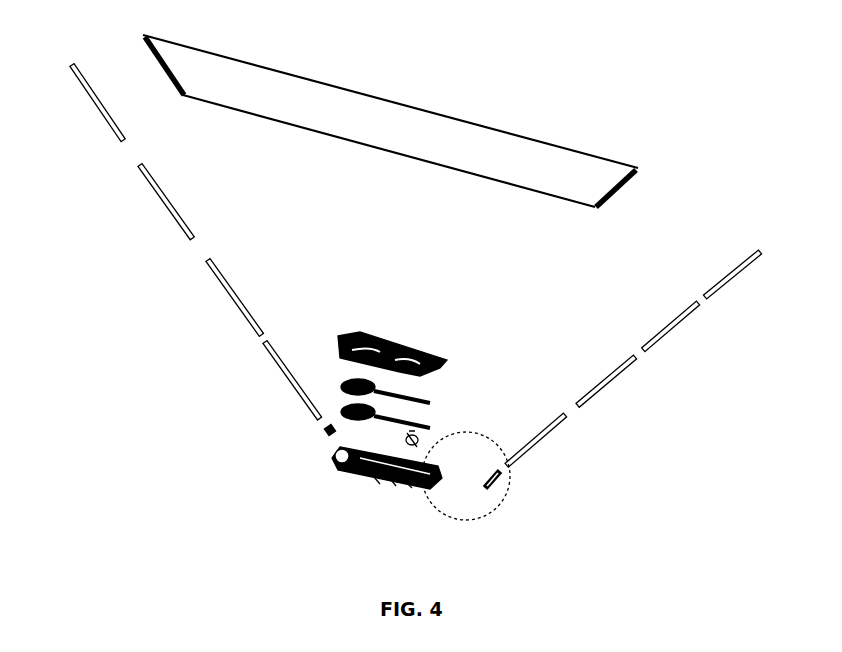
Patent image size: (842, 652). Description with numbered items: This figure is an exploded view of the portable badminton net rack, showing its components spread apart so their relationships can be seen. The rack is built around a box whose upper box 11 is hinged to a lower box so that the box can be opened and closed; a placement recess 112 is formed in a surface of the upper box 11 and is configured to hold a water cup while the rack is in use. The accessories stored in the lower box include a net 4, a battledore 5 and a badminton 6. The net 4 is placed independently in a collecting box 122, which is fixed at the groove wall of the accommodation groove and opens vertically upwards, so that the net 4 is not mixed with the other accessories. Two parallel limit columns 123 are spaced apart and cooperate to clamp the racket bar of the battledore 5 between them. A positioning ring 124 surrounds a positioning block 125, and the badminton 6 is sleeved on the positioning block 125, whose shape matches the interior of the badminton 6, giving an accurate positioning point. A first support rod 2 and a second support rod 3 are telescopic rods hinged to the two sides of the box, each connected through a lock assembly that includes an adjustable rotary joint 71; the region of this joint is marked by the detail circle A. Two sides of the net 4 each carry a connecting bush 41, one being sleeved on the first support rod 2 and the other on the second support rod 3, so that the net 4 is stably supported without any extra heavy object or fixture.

The first support rod 2 is at (630, 363).
The second support rod 3 is at (170, 211).
The net 4 is at (612, 165).
The connecting bush 41 is at (640, 176).
The battledore 5 is at (432, 402).
The badminton 6 is at (403, 438).
The upper box 11 is at (443, 356).
The adjustable rotary joint 71 is at (325, 432).
The placement recess 112 is at (323, 455).
The collecting box 122 is at (352, 470).
The limit column 123 is at (372, 482).
The positioning ring 124 is at (406, 488).
The positioning block 125 is at (390, 482).
The detail region A is at (508, 494).